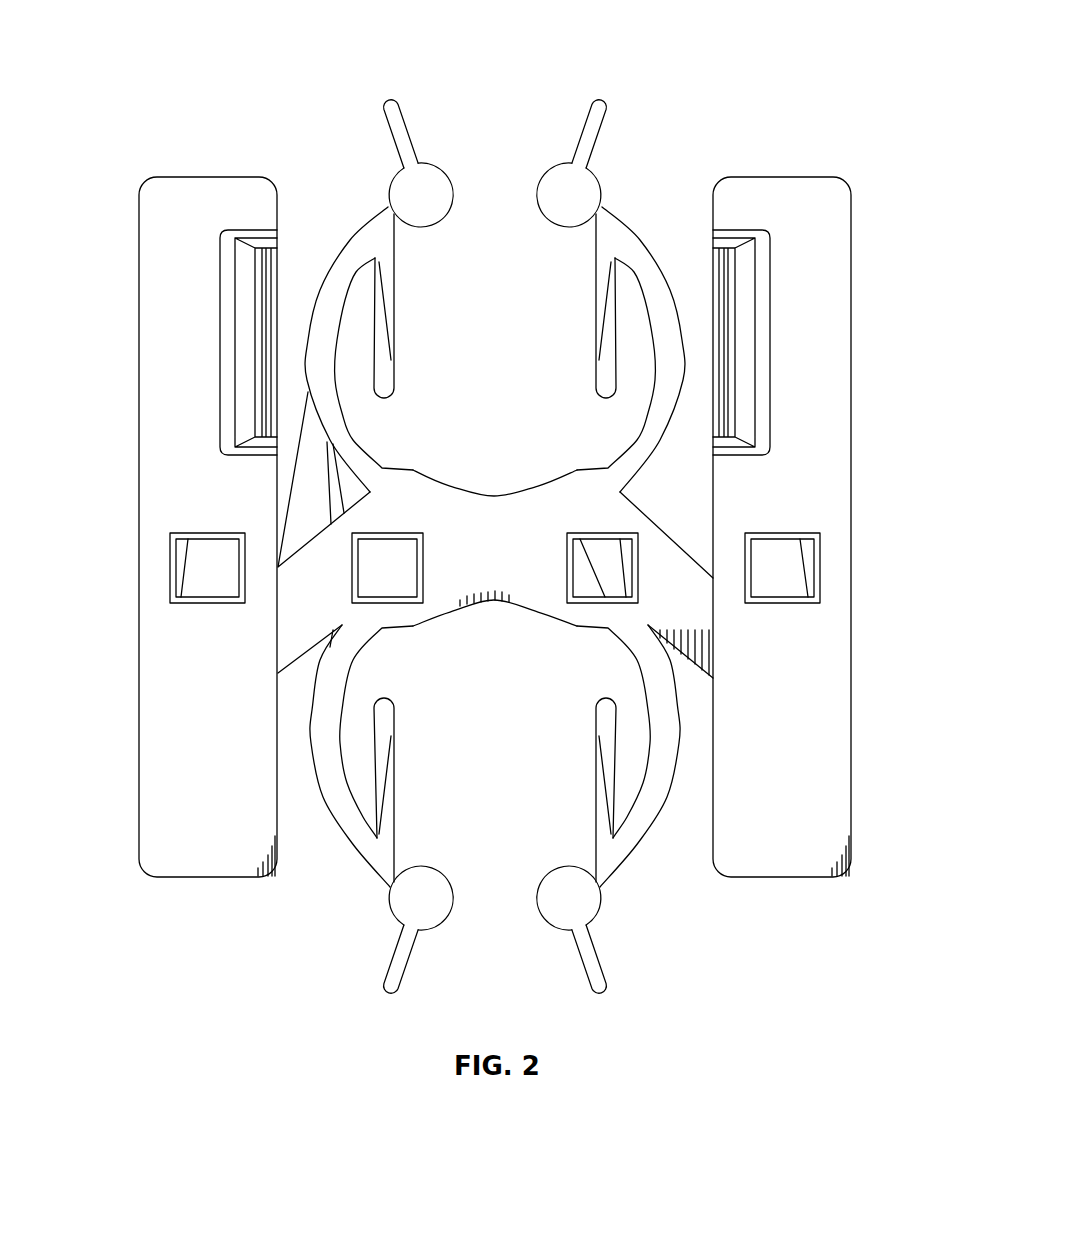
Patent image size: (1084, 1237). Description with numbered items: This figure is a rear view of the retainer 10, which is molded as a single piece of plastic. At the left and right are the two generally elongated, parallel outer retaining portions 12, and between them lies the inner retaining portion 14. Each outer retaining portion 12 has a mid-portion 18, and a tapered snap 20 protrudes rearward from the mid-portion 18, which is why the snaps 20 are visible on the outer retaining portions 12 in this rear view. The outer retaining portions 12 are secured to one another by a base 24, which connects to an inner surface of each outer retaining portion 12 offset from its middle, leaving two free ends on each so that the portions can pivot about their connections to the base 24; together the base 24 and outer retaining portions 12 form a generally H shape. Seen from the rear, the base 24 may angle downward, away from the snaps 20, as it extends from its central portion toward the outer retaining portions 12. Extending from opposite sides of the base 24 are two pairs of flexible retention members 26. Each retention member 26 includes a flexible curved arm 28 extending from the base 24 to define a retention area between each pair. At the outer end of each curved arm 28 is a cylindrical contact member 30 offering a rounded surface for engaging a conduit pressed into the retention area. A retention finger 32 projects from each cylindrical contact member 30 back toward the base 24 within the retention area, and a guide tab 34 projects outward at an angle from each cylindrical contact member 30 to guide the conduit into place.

The retainer 10 is at (795, 42).
The outer retaining portion 12 is at (526, 497).
The inner retaining portion 14 is at (495, 510).
The mid-portion 18 is at (140, 357).
The tapered snap 20 is at (235, 300).
The base 24 is at (668, 532).
The flexible retention member 26 is at (384, 205).
The flexible curved arm 28 is at (350, 420).
The cylindrical contact member 30 is at (420, 228).
The retention finger 32 is at (394, 360).
The guide tab 34 is at (495, 553).